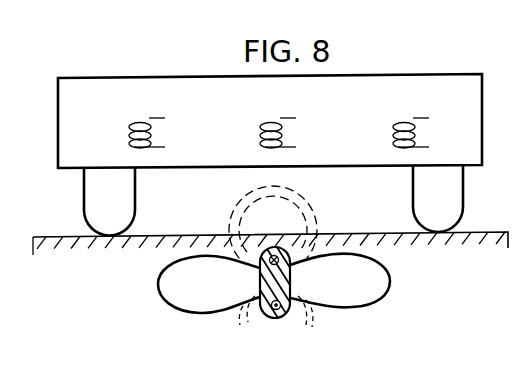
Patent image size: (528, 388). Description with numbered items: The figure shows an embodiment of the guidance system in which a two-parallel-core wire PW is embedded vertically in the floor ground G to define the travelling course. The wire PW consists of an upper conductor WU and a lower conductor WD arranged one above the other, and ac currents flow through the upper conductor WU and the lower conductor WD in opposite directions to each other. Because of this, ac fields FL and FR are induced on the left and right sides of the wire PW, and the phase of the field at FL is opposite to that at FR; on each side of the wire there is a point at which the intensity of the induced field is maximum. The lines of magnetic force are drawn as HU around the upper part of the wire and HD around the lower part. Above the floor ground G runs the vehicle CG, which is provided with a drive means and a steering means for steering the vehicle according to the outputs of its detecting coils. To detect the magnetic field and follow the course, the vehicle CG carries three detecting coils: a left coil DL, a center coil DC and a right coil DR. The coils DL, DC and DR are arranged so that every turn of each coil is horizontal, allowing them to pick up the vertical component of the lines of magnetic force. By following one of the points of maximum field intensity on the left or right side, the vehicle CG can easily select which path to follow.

The vehicle CG is at (482, 112).
The left detecting coil DL is at (141, 118).
The center detecting coil DC is at (276, 118).
The right detecting coil DR is at (396, 118).
The floor ground G is at (479, 233).
The lines of magnetic force (upper) HU is at (298, 187).
The upper conductor WU is at (273, 247).
The left ac field FL is at (158, 284).
The right ac field FR is at (390, 281).
The two-parallel-core wire PW is at (264, 318).
The lines of magnetic force (lower) HD is at (243, 317).
The lower conductor WD is at (284, 318).